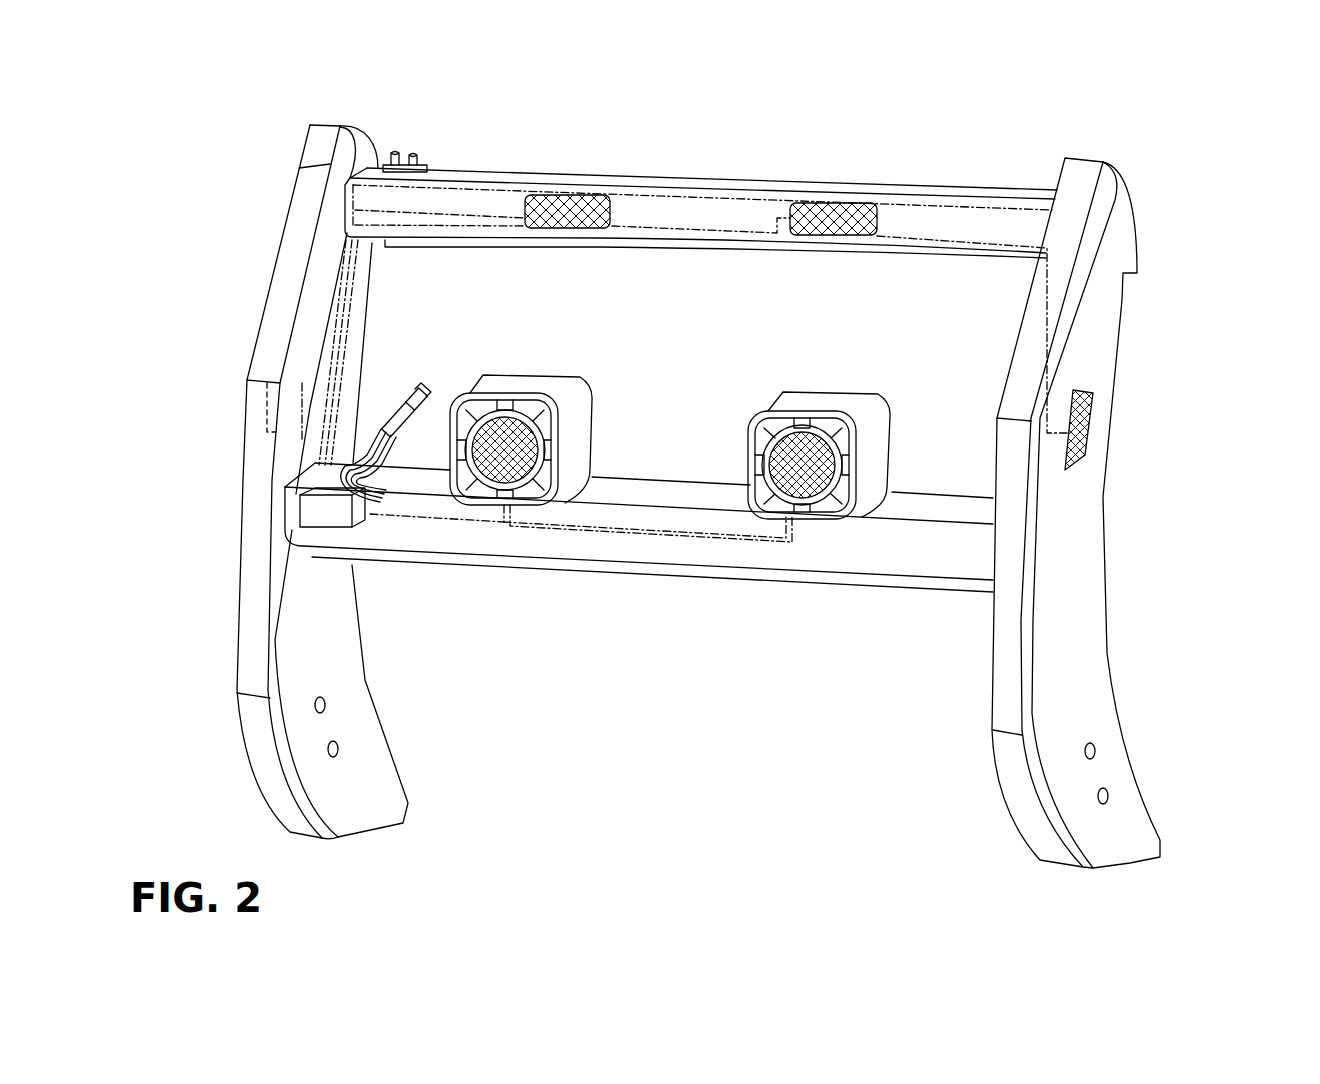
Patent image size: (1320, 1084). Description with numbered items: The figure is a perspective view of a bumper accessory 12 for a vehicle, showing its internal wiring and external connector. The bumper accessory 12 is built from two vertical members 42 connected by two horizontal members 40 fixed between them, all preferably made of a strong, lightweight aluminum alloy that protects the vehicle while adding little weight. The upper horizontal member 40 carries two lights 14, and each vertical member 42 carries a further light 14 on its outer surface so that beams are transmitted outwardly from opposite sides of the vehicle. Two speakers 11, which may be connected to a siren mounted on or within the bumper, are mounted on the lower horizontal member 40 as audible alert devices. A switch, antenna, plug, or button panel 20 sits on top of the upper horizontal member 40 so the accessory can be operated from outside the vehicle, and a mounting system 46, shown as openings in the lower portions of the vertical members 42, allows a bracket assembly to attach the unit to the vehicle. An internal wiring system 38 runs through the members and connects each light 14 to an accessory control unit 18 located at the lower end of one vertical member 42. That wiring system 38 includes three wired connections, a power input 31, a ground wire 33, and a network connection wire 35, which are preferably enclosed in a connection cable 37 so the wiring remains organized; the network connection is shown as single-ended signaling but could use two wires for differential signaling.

The speakers 11 is at (502, 520).
The bumper accessory 12 is at (1160, 153).
The lights 14 is at (555, 196).
The accessory control unit 18 is at (320, 512).
The button panel 20 is at (410, 160).
The power input 31 is at (378, 441).
The ground wire 33 is at (388, 455).
The network connection wire 35 is at (397, 470).
The connection cable 37 is at (419, 410).
The internal wiring system 38 is at (343, 237).
The horizontal members 40 is at (650, 178).
The vertical members 42 is at (253, 672).
The mounting system 46 is at (316, 712).